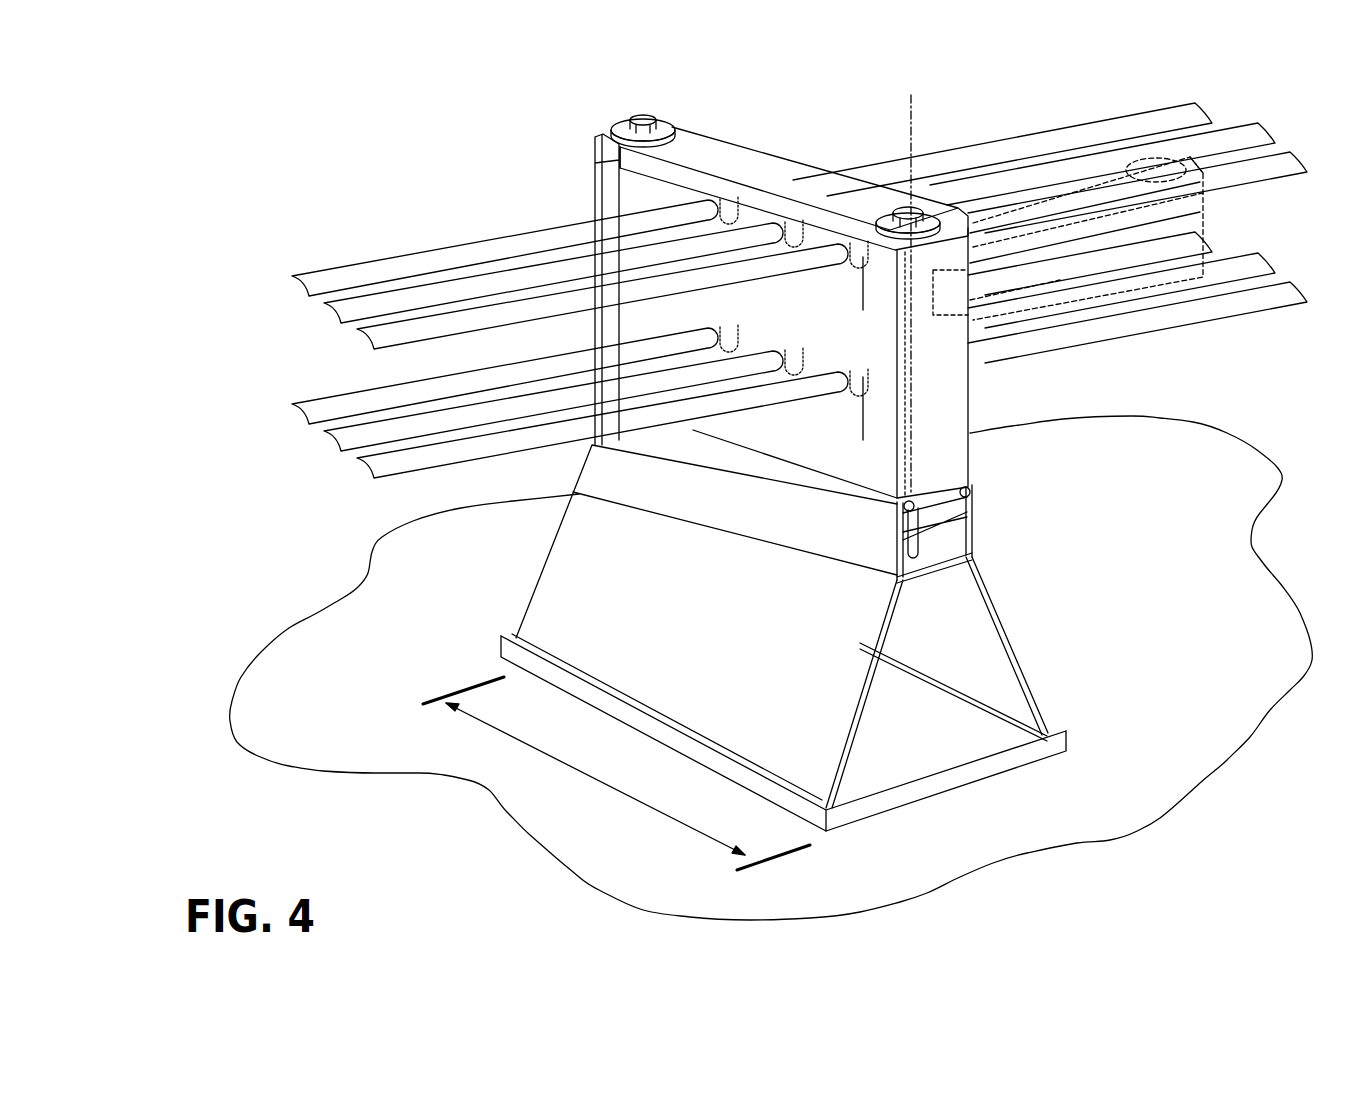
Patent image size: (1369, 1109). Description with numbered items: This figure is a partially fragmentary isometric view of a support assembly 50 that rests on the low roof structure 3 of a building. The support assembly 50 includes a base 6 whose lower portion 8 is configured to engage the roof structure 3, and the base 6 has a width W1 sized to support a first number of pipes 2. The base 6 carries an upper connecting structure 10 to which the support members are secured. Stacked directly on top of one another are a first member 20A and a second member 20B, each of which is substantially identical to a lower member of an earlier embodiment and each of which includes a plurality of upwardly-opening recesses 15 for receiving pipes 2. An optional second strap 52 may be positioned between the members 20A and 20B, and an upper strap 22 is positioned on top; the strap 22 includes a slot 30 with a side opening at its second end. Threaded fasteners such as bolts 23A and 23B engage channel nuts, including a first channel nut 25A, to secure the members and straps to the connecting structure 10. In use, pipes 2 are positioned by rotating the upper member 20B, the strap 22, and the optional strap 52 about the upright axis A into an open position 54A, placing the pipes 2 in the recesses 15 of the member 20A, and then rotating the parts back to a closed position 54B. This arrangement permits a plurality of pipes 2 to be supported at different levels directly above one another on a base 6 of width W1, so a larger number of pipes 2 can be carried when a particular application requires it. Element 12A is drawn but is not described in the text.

The pipes 2 is at (1257, 168).
The low roof structure 3 is at (1192, 735).
The base 6 is at (800, 696).
The lower portion 8 is at (945, 795).
The upper connecting structure 10 is at (978, 538).
The sign panel 12A is at (576, 183).
The upwardly-opening recesses 15 is at (640, 206).
The first member 20A is at (970, 422).
The second member 20B is at (973, 318).
The strap 22 is at (779, 158).
The bolt 23A is at (906, 207).
The bolt 23B is at (640, 116).
The first channel nut 25A is at (965, 511).
The slot 30 is at (600, 150).
The support assembly 50 is at (990, 127).
The second strap 52 is at (973, 375).
The open position 54A is at (1210, 213).
The closed position 54B is at (732, 133).
The upright axis A is at (913, 115).
The width W1 is at (575, 773).